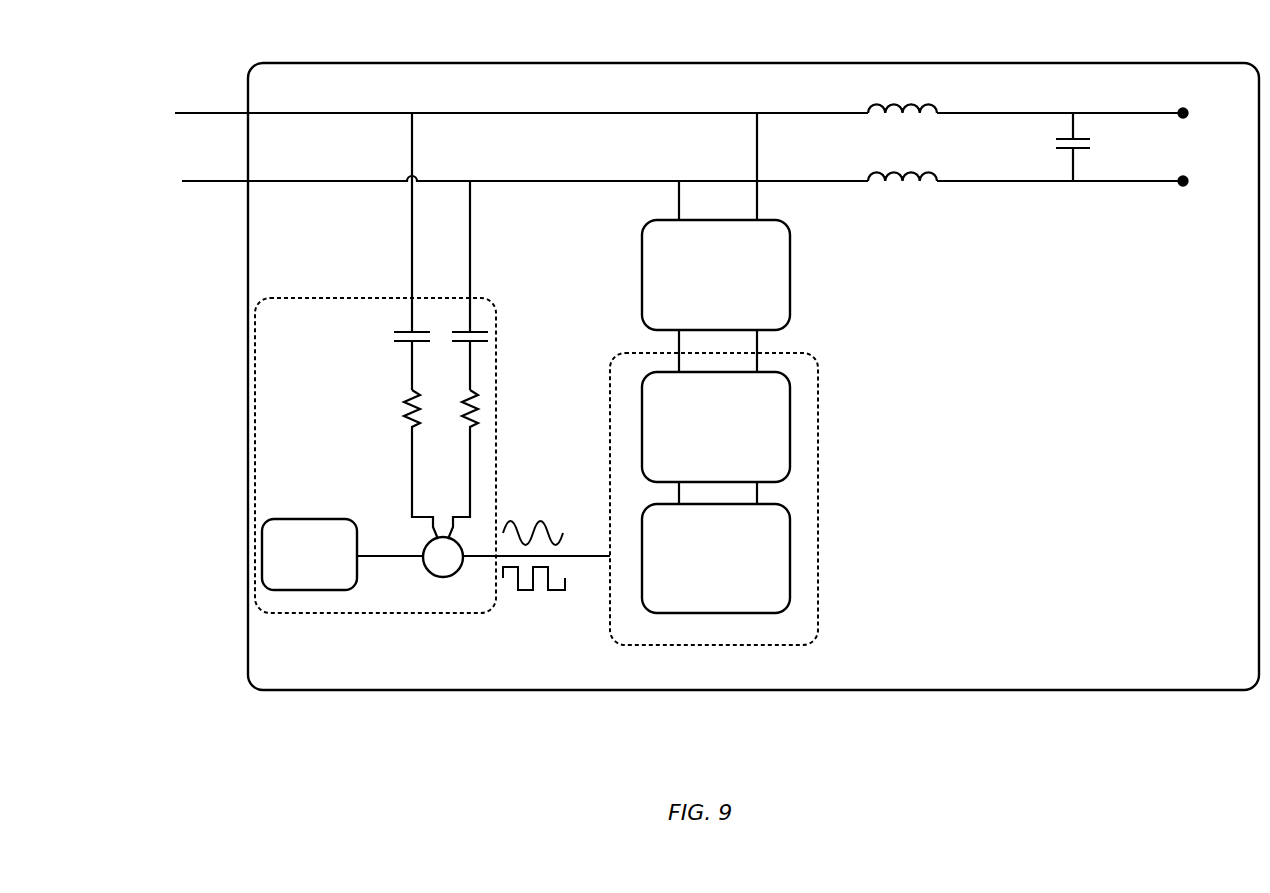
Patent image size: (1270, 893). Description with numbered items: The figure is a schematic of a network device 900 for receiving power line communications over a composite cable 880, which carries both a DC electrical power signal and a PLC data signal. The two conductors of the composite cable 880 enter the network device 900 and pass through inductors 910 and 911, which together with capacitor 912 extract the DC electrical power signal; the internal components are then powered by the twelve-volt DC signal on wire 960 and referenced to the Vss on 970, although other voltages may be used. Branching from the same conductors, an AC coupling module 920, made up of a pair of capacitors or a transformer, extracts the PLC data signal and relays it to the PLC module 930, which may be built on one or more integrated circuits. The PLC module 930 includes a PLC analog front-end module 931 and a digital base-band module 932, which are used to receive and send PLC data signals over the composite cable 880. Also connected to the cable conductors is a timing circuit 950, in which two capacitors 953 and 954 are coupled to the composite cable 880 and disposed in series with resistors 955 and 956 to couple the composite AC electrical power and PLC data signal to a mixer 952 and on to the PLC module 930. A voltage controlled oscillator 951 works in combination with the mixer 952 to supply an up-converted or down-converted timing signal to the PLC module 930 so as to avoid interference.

The composite cable 880 is at (232, 182).
The network device 900 is at (248, 370).
The inductor 910 is at (868, 114).
The inductor 911 is at (868, 182).
The capacitor 912 is at (1066, 150).
The AC coupling module 920 is at (716, 221).
The PLC module 930 is at (806, 353).
The PLC analog front-end module 931 is at (716, 427).
The digital base-band module 932 is at (716, 558).
The timing circuit 950 is at (490, 298).
The voltage controlled oscillator 951 is at (309, 554).
The mixer 952 is at (427, 546).
The capacitor 953 is at (408, 331).
The capacitor 954 is at (473, 325).
The resistor 955 is at (410, 400).
The resistor 956 is at (475, 392).
The wire 960 is at (1182, 113).
The Vss 970 is at (1183, 182).